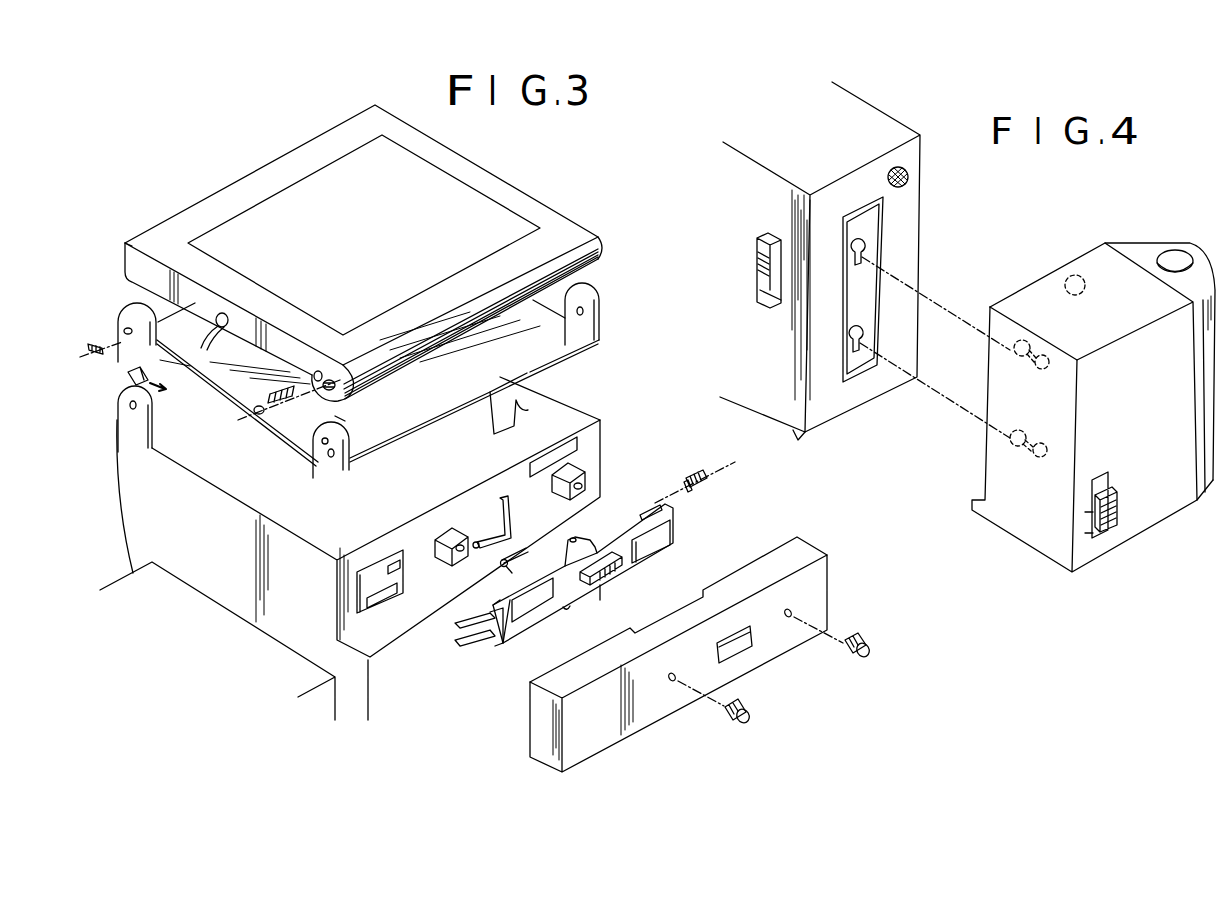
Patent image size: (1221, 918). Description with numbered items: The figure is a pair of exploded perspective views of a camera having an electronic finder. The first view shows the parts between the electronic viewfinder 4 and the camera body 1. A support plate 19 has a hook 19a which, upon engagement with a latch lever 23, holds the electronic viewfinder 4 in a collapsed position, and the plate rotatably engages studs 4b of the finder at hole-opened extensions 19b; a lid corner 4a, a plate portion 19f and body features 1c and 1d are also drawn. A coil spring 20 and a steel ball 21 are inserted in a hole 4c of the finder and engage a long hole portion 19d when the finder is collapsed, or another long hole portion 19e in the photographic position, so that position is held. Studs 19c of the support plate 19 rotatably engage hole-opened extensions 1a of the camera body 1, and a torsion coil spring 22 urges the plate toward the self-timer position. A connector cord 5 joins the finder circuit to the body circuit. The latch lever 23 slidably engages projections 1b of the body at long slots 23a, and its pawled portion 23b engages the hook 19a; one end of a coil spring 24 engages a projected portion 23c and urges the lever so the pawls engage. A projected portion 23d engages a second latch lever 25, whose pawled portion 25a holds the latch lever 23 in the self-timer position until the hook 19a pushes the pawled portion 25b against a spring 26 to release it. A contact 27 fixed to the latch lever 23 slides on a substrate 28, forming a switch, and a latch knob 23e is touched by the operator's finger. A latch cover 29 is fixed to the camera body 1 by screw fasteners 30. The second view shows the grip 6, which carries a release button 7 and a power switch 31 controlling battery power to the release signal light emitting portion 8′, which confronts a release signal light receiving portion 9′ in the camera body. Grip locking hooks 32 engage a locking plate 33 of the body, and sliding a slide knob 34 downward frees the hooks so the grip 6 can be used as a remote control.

In FIG. 3, the camera body 1 is at (192, 580).
In FIG. 4, the camera body 1 is at (878, 122).
In FIG. 3, the hole-opened extensions 1a is at (125, 404).
In FIG. 3, the projections 1b is at (583, 475).
In FIG. 3, the slot in body top 1c is at (578, 440).
In FIG. 3, the projection 1d is at (128, 380).
In FIG. 3, the electronic viewfinder 4 is at (563, 225).
In FIG. 3, the lid corner 4a is at (132, 240).
In FIG. 3, the studs 4b is at (332, 380).
In FIG. 3, the hole 4c is at (318, 370).
In FIG. 3, the connector cord 5 is at (215, 330).
In FIG. 4, the grip 6 is at (1160, 515).
In FIG. 4, the release button 7 is at (1170, 250).
In FIG. 4, the release signal light emitting portion 8′ is at (1072, 275).
In FIG. 4, the release signal light receiving portion 9′ is at (908, 178).
In FIG. 3, the support plate 19 is at (587, 332).
In FIG. 3, the hook 19a is at (522, 420).
In FIG. 3, the hole-opened extensions 19b is at (593, 303).
In FIG. 3, the studs 19c is at (128, 315).
In FIG. 3, the long hole portion 19d is at (316, 450).
In FIG. 3, the long hole portion 19e is at (340, 418).
In FIG. 3, the bracket plate portion 19f is at (235, 369).
In FIG. 3, the coil spring 20 is at (258, 412).
In FIG. 3, the steel ball 21 is at (278, 405).
In FIG. 3, the torsion coil spring 22 is at (92, 344).
In FIG. 3, the latch lever 23 is at (675, 522).
In FIG. 3, the long slots 23a is at (672, 547).
In FIG. 3, the pawled portion 23b is at (586, 535).
In FIG. 3, the projected portion 23c is at (655, 507).
In FIG. 3, the projected portion 23d is at (570, 608).
In FIG. 3, the latch knob 23e is at (628, 568).
In FIG. 3, the coil spring 24 is at (690, 475).
In FIG. 3, the latch lever 25 is at (476, 542).
In FIG. 3, the pawled portion 25a is at (506, 547).
In FIG. 3, the pawled portion 25b is at (506, 496).
In FIG. 3, the spring 26 is at (500, 565).
In FIG. 3, the contact 27 is at (477, 646).
In FIG. 3, the substrate 28 is at (360, 594).
In FIG. 3, the latch cover 29 is at (590, 740).
In FIG. 3, the screw fasteners 30 is at (746, 722).
In FIG. 4, the power switch 31 is at (1112, 532).
In FIG. 4, the grip locking hooks 32 is at (1010, 350).
In FIG. 4, the locking plate 33 is at (862, 385).
In FIG. 4, the slide knob 34 is at (765, 306).